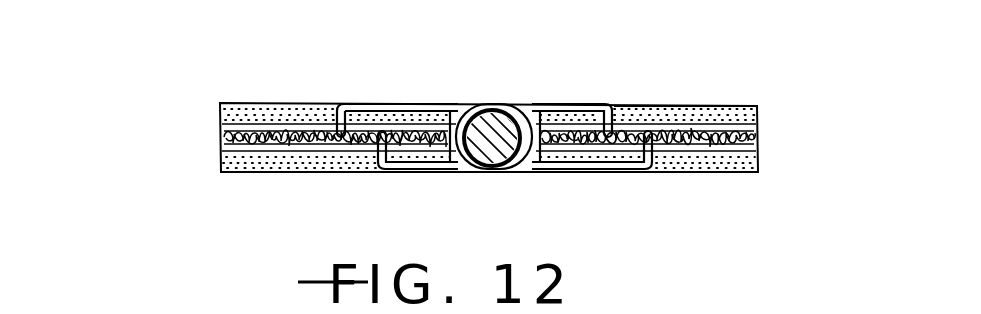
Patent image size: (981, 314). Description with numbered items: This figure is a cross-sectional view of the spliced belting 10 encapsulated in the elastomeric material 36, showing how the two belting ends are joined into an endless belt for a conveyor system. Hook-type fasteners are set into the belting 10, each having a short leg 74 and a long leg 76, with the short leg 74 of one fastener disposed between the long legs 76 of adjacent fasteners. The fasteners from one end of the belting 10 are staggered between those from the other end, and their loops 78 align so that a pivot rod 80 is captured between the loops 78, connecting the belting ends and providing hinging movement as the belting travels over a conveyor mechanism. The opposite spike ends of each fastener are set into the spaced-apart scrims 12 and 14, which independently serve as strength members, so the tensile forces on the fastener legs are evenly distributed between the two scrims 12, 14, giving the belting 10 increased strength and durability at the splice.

The belting 10 is at (285, 88).
The scrim 12 is at (202, 127).
The scrim 14 is at (203, 152).
The elastomeric material 36 is at (715, 106).
The short leg 74 is at (573, 105).
The long leg 76 is at (410, 104).
The loop 78 is at (495, 106).
The pivot rod 80 is at (494, 160).